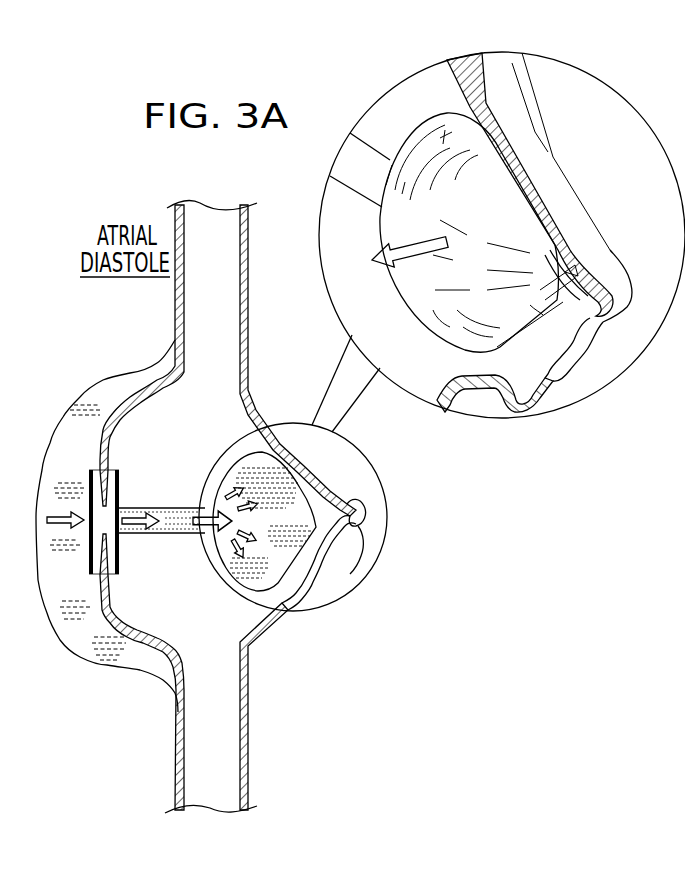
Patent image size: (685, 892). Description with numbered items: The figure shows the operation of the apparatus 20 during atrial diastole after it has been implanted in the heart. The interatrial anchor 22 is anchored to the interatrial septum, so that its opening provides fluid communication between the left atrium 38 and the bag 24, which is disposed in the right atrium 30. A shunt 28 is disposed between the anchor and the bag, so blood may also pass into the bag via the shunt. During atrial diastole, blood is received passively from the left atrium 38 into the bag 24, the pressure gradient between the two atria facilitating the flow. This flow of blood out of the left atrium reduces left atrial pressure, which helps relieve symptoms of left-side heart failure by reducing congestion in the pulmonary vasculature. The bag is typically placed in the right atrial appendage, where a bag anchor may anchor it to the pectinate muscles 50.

The apparatus 20 is at (226, 598).
The interatrial anchor 22 is at (88, 549).
The bag 24 is at (302, 508).
The shunt 28 is at (181, 534).
The right atrium 30 is at (193, 450).
The left atrium 38 is at (92, 450).
The pectinate muscles 50 is at (350, 574).